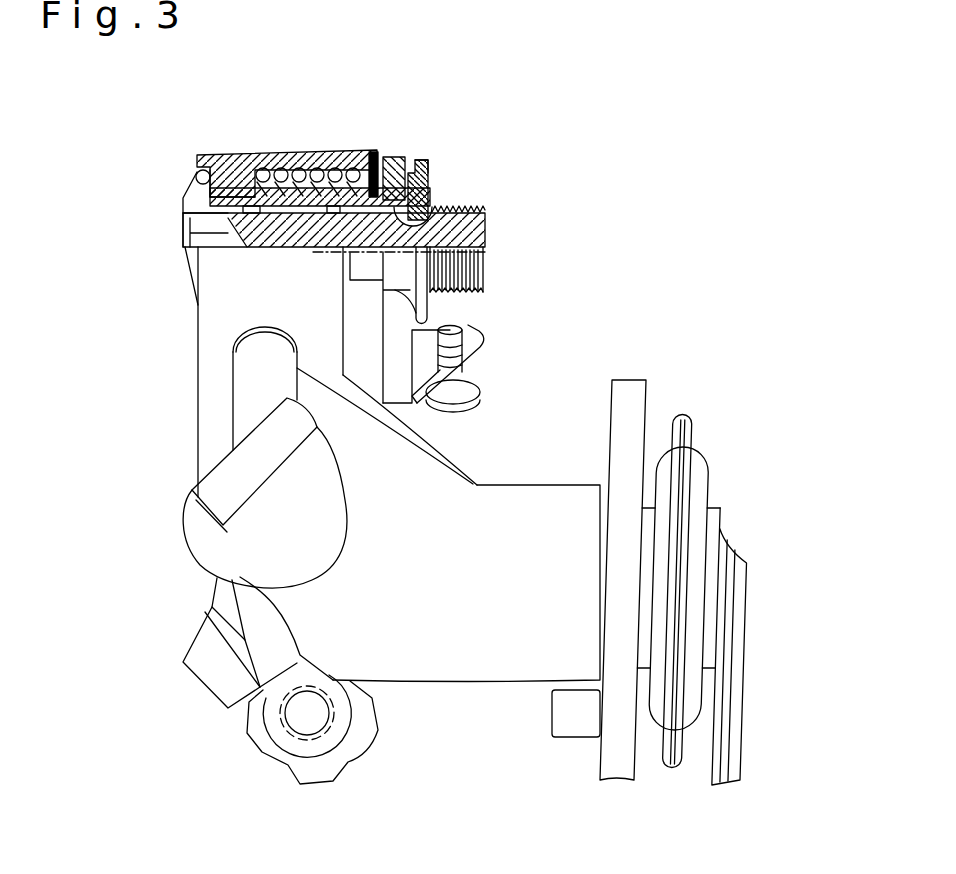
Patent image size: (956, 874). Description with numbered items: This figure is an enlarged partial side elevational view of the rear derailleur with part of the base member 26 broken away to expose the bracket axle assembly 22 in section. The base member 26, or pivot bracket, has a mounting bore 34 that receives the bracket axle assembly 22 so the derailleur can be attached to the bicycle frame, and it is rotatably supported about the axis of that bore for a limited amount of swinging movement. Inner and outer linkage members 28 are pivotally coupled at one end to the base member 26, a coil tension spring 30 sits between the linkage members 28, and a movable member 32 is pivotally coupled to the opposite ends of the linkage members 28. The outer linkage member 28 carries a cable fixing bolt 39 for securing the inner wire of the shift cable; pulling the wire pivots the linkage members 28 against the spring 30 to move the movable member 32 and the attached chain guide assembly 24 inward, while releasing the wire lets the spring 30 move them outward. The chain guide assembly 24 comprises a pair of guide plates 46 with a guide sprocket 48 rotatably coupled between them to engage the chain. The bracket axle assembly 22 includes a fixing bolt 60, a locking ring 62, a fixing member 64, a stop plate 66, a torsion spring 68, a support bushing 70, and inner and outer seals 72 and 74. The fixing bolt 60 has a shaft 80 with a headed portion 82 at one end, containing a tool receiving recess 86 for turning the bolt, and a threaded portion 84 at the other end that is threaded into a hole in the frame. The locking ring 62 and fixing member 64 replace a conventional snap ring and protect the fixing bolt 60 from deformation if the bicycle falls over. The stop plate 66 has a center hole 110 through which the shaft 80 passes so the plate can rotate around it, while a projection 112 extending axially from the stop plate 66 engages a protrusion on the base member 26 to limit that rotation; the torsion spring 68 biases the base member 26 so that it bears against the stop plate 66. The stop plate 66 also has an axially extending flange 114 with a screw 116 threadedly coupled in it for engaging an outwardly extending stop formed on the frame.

The bracket axle assembly 22 is at (428, 138).
The chain guide assembly 24 is at (760, 582).
The base member 26 is at (189, 334).
The linkage members 28 is at (198, 463).
The coil tension spring 30 is at (350, 753).
The movable member 32 is at (460, 680).
The mounting bore 34 is at (310, 150).
The cable fixing bolt 39 is at (205, 690).
The guide plates 46 is at (748, 715).
The guide sprocket 48 is at (712, 493).
The fixing bolt 60 is at (176, 262).
The locking ring 62 is at (430, 190).
The fixing member 64 is at (428, 165).
The stop plate 66 is at (393, 150).
The torsion spring 68 is at (290, 153).
The support bushing 70 is at (245, 165).
The inner seal 72 is at (368, 152).
The outer seal 74 is at (200, 172).
The shaft 80 is at (288, 250).
The headed portion 82 is at (183, 200).
The threaded portion 84 is at (470, 300).
The tool receiving recess 86 is at (185, 222).
The center hole 110 is at (480, 230).
The projection 112 is at (418, 313).
The flange 114 is at (487, 355).
The screw 116 is at (465, 410).